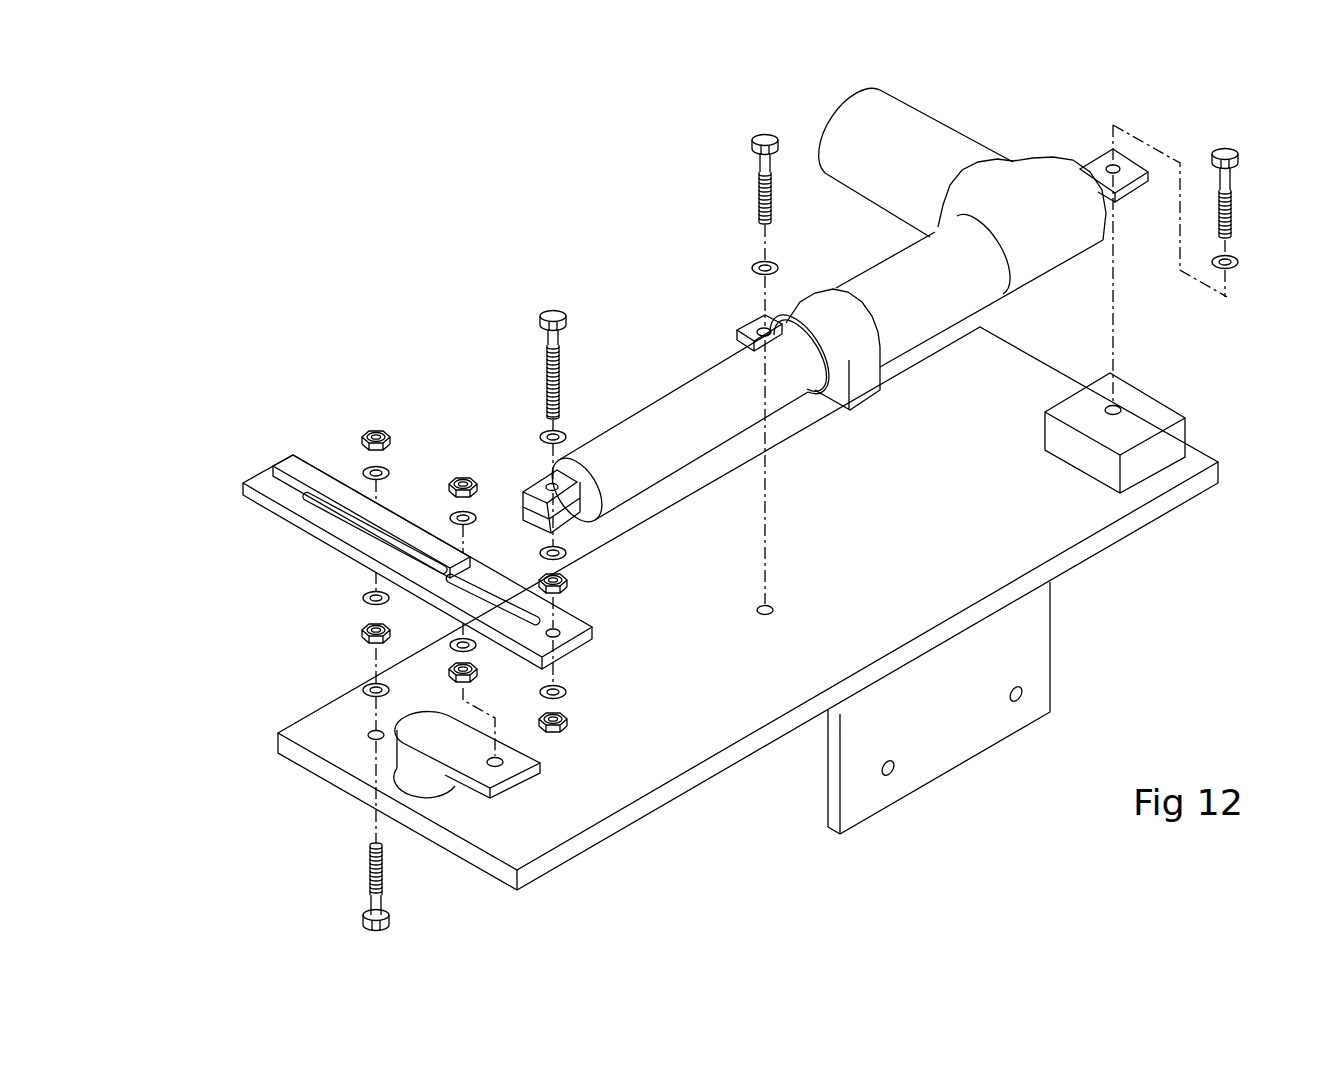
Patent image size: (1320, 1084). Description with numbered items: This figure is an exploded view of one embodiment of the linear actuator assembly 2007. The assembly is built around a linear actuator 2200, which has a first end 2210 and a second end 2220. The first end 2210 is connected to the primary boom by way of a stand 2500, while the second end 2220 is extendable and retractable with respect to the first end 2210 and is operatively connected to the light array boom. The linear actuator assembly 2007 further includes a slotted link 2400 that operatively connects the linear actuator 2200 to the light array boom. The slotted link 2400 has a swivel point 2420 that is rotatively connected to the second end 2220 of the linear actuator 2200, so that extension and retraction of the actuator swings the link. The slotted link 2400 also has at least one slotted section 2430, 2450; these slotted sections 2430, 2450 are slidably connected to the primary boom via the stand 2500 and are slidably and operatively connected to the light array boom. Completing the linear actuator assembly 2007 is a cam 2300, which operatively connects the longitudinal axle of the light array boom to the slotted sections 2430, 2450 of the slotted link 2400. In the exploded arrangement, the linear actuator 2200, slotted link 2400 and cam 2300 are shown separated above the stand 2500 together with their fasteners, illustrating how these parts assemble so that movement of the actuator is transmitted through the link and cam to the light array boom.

The linear actuator assembly 2007 is at (704, 496).
The linear actuator 2200 is at (905, 278).
The first end 2210 is at (1097, 168).
The second end 2220 is at (535, 482).
The cam 2300 is at (417, 773).
The slotted link 2400 is at (516, 642).
The swivel point 2420 is at (557, 640).
The slotted section 2430 is at (508, 598).
The slotted section 2450 is at (337, 538).
The stand 2500 is at (1007, 542).